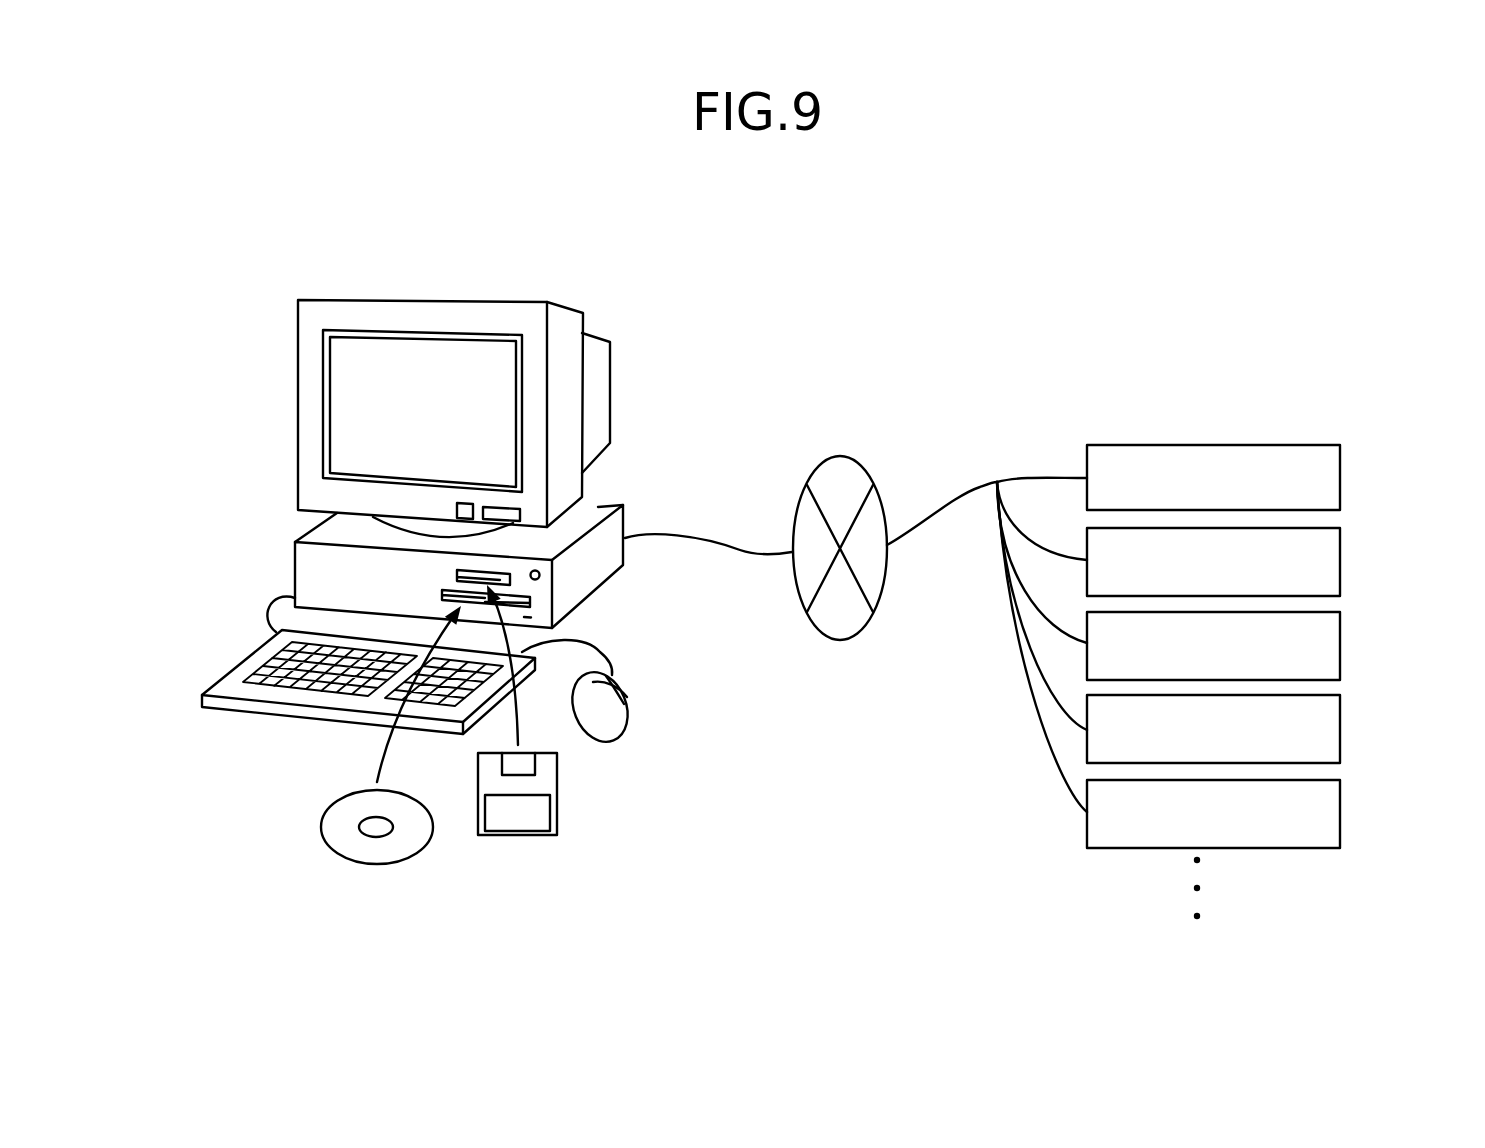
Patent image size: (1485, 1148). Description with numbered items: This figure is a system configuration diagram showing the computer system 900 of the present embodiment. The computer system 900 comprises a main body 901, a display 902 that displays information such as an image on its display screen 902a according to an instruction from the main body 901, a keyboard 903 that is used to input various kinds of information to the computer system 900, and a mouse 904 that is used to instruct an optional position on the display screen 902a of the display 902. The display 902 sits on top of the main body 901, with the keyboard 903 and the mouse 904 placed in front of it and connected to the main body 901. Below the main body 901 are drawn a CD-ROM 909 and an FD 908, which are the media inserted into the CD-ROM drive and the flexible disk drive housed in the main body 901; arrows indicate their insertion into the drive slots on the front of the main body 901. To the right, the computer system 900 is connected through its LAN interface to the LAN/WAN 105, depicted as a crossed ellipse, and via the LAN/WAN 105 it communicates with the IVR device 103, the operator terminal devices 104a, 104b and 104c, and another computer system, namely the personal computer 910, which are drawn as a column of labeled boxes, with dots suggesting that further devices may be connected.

The computer system 900 is at (508, 228).
The main body 901 is at (600, 507).
The display 902 is at (566, 330).
The display screen 902a is at (425, 365).
The keyboard 903 is at (233, 678).
The mouse 904 is at (604, 715).
The FD 908 is at (519, 838).
The CD-ROM 909 is at (320, 828).
The other computer system (personal computer) 910 is at (1340, 812).
The IVR device 103 is at (1340, 470).
The operator terminal device 104a is at (1340, 562).
The operator terminal device 104b is at (1340, 645).
The operator terminal device 104c is at (1340, 728).
The LAN/WAN 105 is at (846, 640).